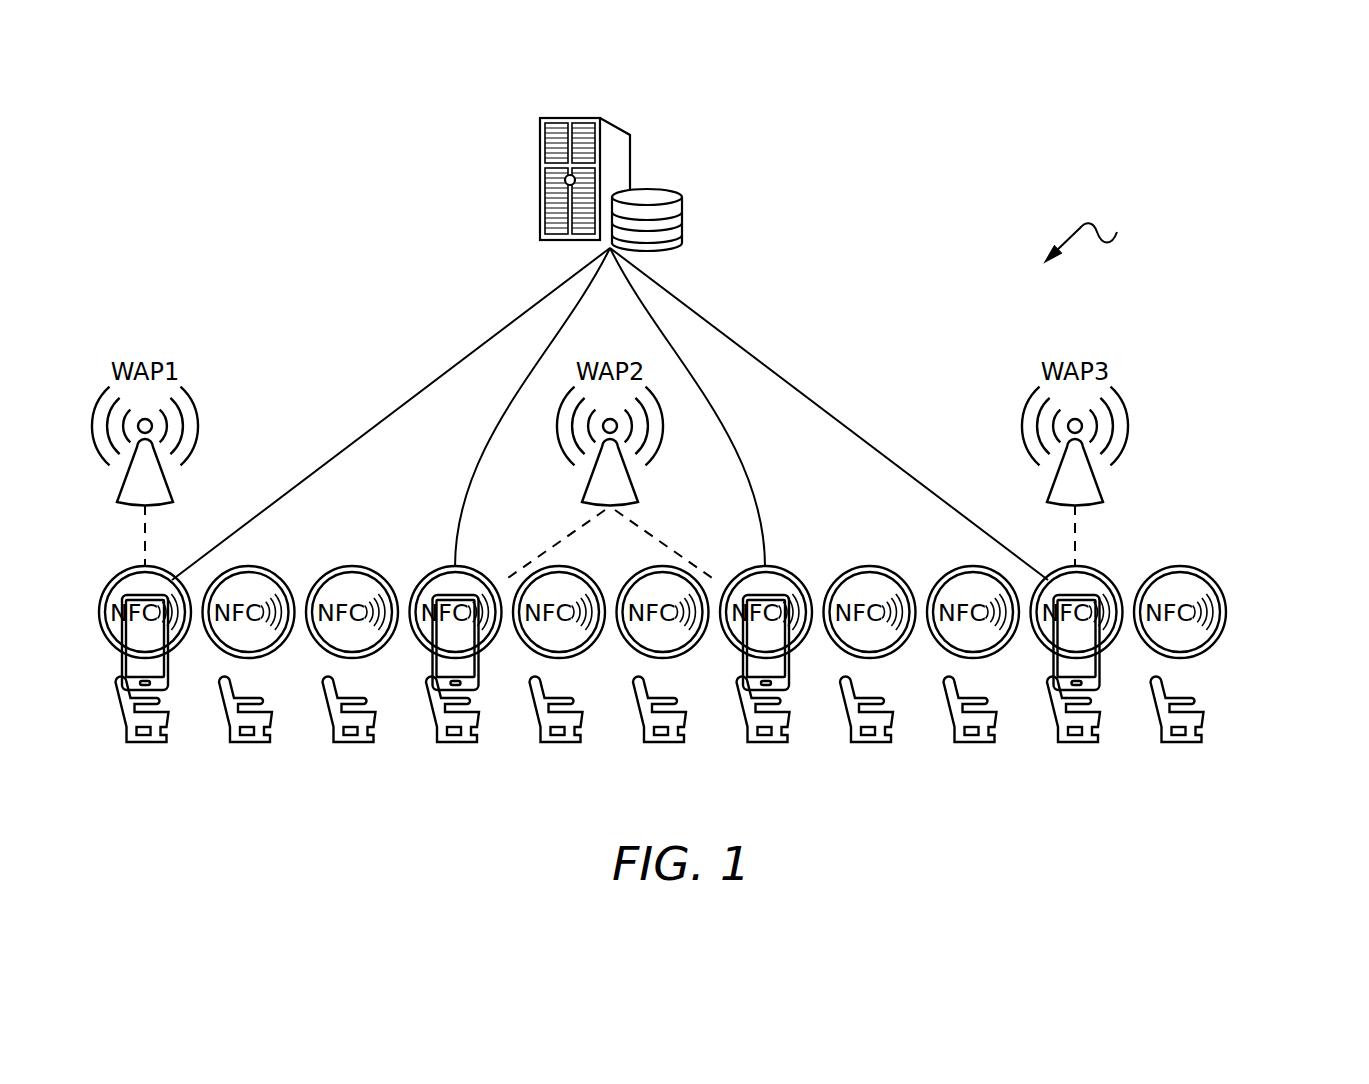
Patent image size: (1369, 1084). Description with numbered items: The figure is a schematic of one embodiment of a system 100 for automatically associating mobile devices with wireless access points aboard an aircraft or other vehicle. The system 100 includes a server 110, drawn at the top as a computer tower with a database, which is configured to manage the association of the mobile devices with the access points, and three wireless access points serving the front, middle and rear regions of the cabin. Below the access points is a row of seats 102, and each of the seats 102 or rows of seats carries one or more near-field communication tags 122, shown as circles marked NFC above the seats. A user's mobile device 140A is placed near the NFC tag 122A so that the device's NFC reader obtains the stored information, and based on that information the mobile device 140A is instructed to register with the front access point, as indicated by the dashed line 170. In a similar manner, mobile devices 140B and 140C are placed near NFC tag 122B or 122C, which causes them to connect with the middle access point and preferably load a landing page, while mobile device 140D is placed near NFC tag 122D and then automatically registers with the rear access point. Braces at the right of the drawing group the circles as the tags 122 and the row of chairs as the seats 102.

The system 100 is at (1103, 232).
The server 110 is at (656, 190).
The dashed line 170 is at (143, 547).
The near-field communication tags 122 is at (1243, 655).
The seats 102 is at (1243, 747).
The NFC tag 122A is at (113, 647).
The NFC tag 122B is at (424, 647).
The NFC tag 122C is at (734, 647).
The NFC tag 122D is at (1044, 647).
The mobile device 140A is at (168, 677).
The mobile device 140B is at (478, 677).
The mobile device 140C is at (789, 677).
The mobile device 140D is at (1100, 677).